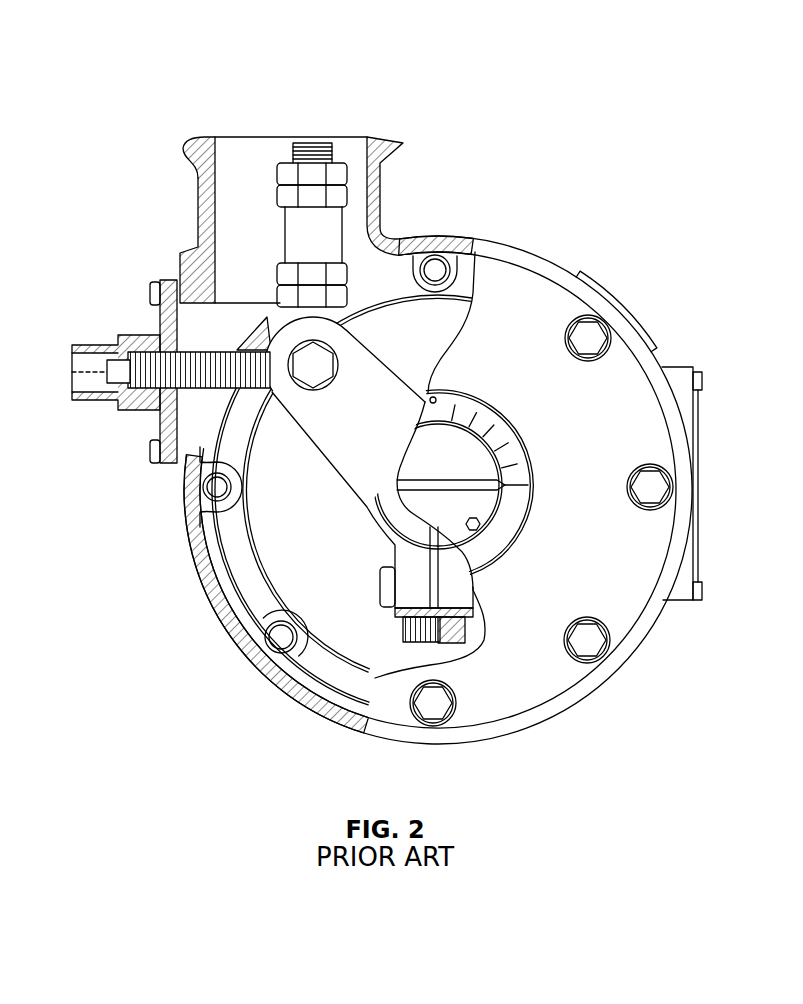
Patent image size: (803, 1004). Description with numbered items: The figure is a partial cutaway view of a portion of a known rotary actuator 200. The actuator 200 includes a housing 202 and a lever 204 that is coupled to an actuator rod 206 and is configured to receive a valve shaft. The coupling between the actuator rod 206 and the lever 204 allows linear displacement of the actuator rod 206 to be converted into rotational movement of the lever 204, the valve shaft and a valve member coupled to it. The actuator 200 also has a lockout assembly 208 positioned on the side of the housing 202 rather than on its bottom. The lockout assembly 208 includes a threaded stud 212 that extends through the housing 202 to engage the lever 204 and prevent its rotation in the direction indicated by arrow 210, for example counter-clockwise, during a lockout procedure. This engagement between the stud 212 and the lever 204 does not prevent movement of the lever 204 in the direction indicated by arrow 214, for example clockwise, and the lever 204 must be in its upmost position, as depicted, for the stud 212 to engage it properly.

The rotary actuator 200 is at (167, 40).
The housing 202 is at (521, 257).
The lever 204 is at (372, 387).
The actuator rod 206 is at (298, 231).
The lockout assembly 208 is at (109, 308).
The arrow 210 is at (302, 500).
The threaded stud 212 is at (148, 383).
The arrow 214 is at (528, 358).